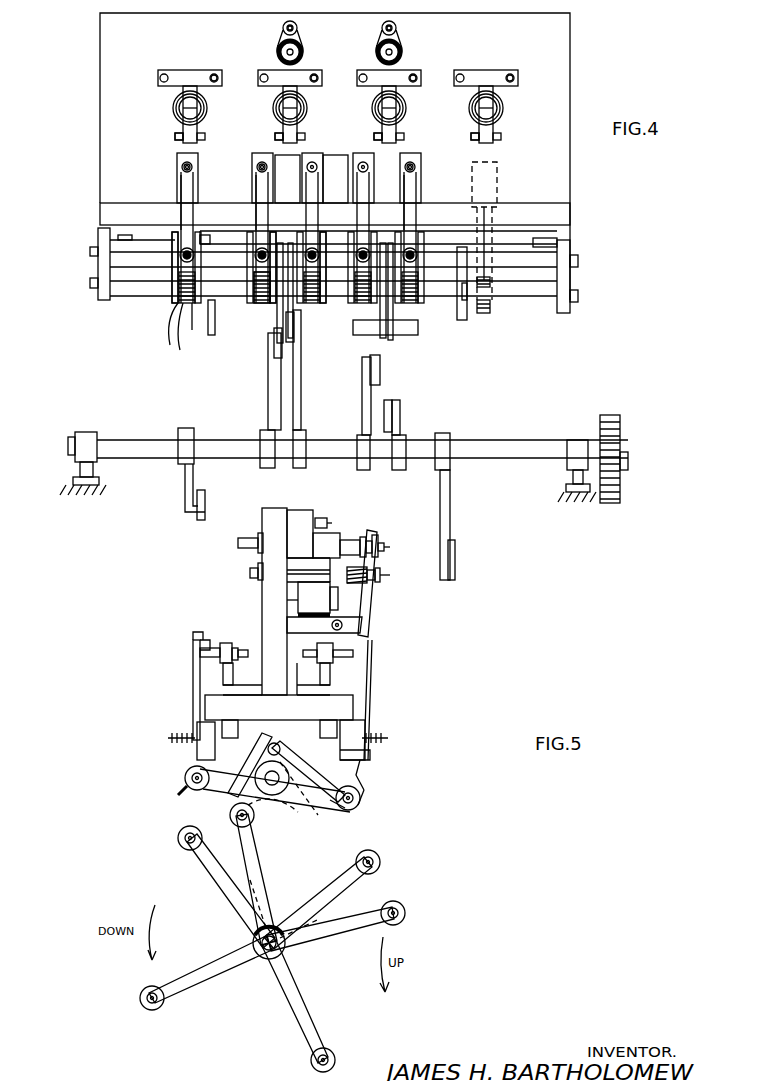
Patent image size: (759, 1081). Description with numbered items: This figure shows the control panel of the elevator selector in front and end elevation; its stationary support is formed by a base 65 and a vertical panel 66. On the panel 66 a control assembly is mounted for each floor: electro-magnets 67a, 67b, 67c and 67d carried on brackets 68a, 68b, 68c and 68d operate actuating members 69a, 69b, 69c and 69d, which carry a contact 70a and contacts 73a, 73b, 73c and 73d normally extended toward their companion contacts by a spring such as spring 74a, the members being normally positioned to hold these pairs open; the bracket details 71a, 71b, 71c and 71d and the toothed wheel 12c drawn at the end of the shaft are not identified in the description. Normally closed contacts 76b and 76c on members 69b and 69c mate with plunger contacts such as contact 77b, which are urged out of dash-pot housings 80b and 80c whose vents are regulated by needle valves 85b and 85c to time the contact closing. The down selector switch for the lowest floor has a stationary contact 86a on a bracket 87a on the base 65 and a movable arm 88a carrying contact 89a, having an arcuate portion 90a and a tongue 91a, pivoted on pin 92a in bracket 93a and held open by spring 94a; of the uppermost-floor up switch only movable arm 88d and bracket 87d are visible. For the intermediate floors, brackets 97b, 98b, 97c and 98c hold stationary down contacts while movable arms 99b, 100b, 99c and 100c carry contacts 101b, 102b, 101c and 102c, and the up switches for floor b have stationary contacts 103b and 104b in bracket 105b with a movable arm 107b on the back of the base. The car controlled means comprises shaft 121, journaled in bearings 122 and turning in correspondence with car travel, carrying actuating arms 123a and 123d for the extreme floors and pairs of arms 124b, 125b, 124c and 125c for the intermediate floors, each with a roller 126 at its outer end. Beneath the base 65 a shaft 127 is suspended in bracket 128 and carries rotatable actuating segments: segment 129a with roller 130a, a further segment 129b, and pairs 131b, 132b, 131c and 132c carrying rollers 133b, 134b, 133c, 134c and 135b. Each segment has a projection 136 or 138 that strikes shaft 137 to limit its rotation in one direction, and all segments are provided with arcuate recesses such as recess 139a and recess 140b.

In FIG. 4, the drive gear 12c is at (620, 428).
In FIG. 4, the base 65 is at (100, 210).
In FIG. 5, the base 65 is at (215, 700).
In FIG. 4, the vertical panel 66 is at (100, 70).
In FIG. 5, the vertical panel 66 is at (268, 525).
In FIG. 4, the electro-magnet 67a is at (173, 93).
In FIG. 5, the electro-magnet 67a is at (310, 586).
In FIG. 4, the electro-magnet 67b is at (273, 96).
In FIG. 4, the electro-magnet 67c is at (372, 98).
In FIG. 4, the electro-magnet 67d is at (469, 102).
In FIG. 4, the bracket 68a is at (175, 134).
In FIG. 5, the bracket 68a is at (298, 620).
In FIG. 4, the bracket 68b is at (275, 136).
In FIG. 4, the bracket 68c is at (374, 138).
In FIG. 4, the bracket 68d is at (471, 140).
In FIG. 4, the actuating member 69a is at (183, 110).
In FIG. 5, the actuating member 69a is at (363, 620).
In FIG. 4, the actuating member 69b is at (283, 112).
In FIG. 4, the actuating member 69c is at (382, 115).
In FIG. 4, the actuating member 69d is at (479, 119).
In FIG. 5, the contact 70a is at (262, 558).
In FIG. 4, the mounting bracket 71a is at (164, 72).
In FIG. 5, the mounting bracket 71a is at (370, 603).
In FIG. 4, the mounting bracket 71b is at (264, 72).
In FIG. 4, the mounting bracket 71c is at (363, 72).
In FIG. 4, the mounting bracket 71d is at (460, 72).
In FIG. 4, the contact 73a is at (214, 72).
In FIG. 4, the contact 73b is at (314, 72).
In FIG. 4, the contact 73c is at (413, 72).
In FIG. 4, the contact 73d is at (510, 72).
In FIG. 5, the spring 74a is at (380, 572).
In FIG. 4, the contact 76b is at (280, 50).
In FIG. 5, the contact 76b is at (366, 536).
In FIG. 4, the contact 76c is at (378, 52).
In FIG. 5, the plunger contact 77b is at (350, 538).
In FIG. 4, the dash-pot housing 80b is at (284, 36).
In FIG. 5, the dash-pot housing 80b is at (300, 525).
In FIG. 4, the dash-pot housing 80c is at (383, 36).
In FIG. 4, the needle valve 85b is at (298, 28).
In FIG. 5, the needle valve 85b is at (325, 515).
In FIG. 4, the needle valve 85c is at (397, 28).
In FIG. 5, the stationary contact 86a is at (327, 669).
In FIG. 4, the bracket 87a is at (177, 178).
In FIG. 5, the bracket 87a is at (301, 679).
In FIG. 4, the bracket 87d is at (497, 178).
In FIG. 4, the movable arm 88a is at (181, 185).
In FIG. 5, the movable arm 88a is at (368, 700).
In FIG. 4, the movable arm 88d is at (492, 248).
In FIG. 4, the contact 89a is at (182, 163).
In FIG. 5, the contact 89a is at (370, 652).
In FIG. 4, the arcuate portion 90a is at (175, 310).
In FIG. 5, the arcuate portion 90a is at (364, 778).
In FIG. 4, the tongue 91a is at (183, 320).
In FIG. 5, the tongue 91a is at (362, 800).
In FIG. 4, the pin 92a is at (178, 258).
In FIG. 5, the pin 92a is at (362, 722).
In FIG. 4, the bracket 93a is at (172, 240).
In FIG. 5, the bracket 93a is at (370, 755).
In FIG. 4, the spring 94a is at (180, 280).
In FIG. 5, the spring 94a is at (388, 732).
In FIG. 4, the bracket 97b is at (252, 160).
In FIG. 4, the bracket 97c is at (325, 225).
In FIG. 4, the bracket 98b is at (287, 174).
In FIG. 4, the bracket 98c is at (420, 166).
In FIG. 4, the movable arm 99b is at (256, 185).
In FIG. 4, the movable arm 99c is at (334, 192).
In FIG. 4, the movable arm 100b is at (290, 191).
In FIG. 4, the movable arm 100c is at (410, 193).
In FIG. 4, the contact 101b is at (258, 168).
In FIG. 4, the contact 101c is at (337, 179).
In FIG. 4, the contact 102b is at (290, 174).
In FIG. 4, the contact 102c is at (418, 170).
In FIG. 5, the stationary up contact 103b is at (206, 640).
In FIG. 5, the stationary up contact 104b is at (200, 650).
In FIG. 5, the bracket 105b is at (240, 686).
In FIG. 5, the movable arm 107b is at (193, 672).
In FIG. 4, the shaft 121 is at (512, 440).
In FIG. 5, the shaft 121 is at (254, 940).
In FIG. 4, the bearing 122 is at (85, 433).
In FIG. 4, the actuating arm 123a is at (182, 476).
In FIG. 5, the actuating arm 123a is at (305, 1005).
In FIG. 4, the actuating arm 123d is at (452, 510).
In FIG. 5, the actuating arm 123d is at (203, 978).
In FIG. 4, the actuating arm 124b is at (268, 405).
In FIG. 5, the actuating arm 124b is at (333, 886).
In FIG. 4, the actuating arm 124c is at (362, 395).
In FIG. 5, the actuating arm 124c is at (215, 876).
In FIG. 4, the actuating arm 125b is at (301, 390).
In FIG. 5, the actuating arm 125b is at (333, 935).
In FIG. 4, the actuating arm 125c is at (400, 425).
In FIG. 5, the actuating arm 125c is at (258, 862).
In FIG. 4, the roller 126 is at (198, 515).
In FIG. 5, the roller 126 is at (332, 1050).
In FIG. 4, the shaft 127 is at (105, 290).
In FIG. 5, the shaft 127 is at (280, 778).
In FIG. 4, the bracket 128 is at (90, 266).
In FIG. 4, the actuating segment 129a is at (212, 318).
In FIG. 5, the actuating segment 129a is at (340, 815).
In FIG. 4, the pin 129b is at (467, 315).
In FIG. 4, the roller 130a is at (190, 330).
In FIG. 5, the roller 130a is at (355, 806).
In FIG. 4, the actuating segment 131b is at (270, 270).
In FIG. 4, the actuating segment 131c is at (340, 305).
In FIG. 4, the actuating segment 132b is at (280, 243).
In FIG. 5, the actuating segment 132b is at (183, 800).
In FIG. 4, the actuating segment 132c is at (395, 318).
In FIG. 4, the roller 133b is at (262, 305).
In FIG. 4, the roller 133c is at (375, 338).
In FIG. 4, the roller 134b is at (298, 320).
In FIG. 4, the roller 134c is at (430, 340).
In FIG. 5, the roller 135b is at (190, 785).
In FIG. 5, the projection 136 is at (258, 758).
In FIG. 4, the shaft 137 is at (378, 238).
In FIG. 5, the shaft 137 is at (280, 742).
In FIG. 5, the projection 138 is at (288, 752).
In FIG. 5, the arcuate recess 139a is at (290, 815).
In FIG. 5, the arcuate recess 140b is at (258, 816).